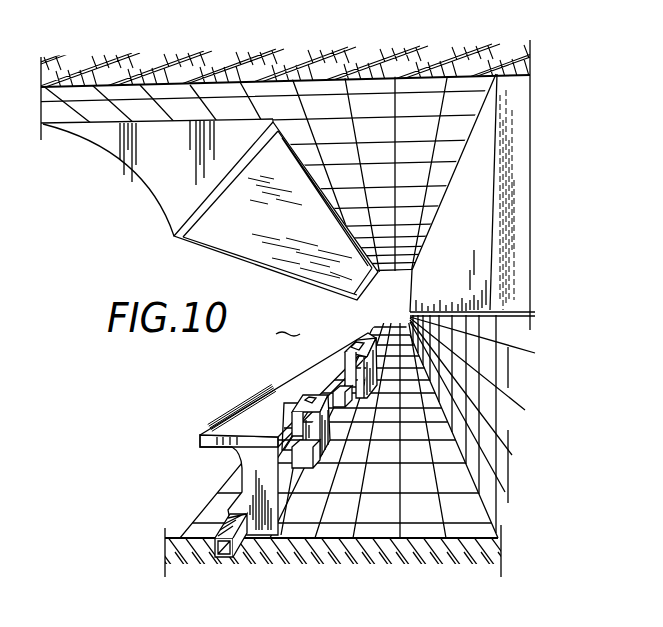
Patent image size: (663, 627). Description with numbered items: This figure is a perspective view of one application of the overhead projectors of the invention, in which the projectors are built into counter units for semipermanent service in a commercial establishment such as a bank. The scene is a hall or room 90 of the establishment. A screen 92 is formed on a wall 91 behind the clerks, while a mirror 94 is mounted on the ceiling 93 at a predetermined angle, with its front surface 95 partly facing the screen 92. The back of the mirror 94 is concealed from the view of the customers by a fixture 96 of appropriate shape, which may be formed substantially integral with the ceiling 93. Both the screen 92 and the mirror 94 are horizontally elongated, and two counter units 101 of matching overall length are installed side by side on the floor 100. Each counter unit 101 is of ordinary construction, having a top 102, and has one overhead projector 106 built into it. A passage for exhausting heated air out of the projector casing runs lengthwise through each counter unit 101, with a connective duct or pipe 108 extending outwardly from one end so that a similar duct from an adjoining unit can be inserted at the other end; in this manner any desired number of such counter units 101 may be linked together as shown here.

The hall or room 90 is at (287, 321).
The wall 91 is at (503, 370).
The screen 92 is at (478, 184).
The ceiling 93 is at (420, 88).
The mirror 94 is at (207, 234).
The front surface 95 is at (281, 245).
The fixture 96 is at (151, 172).
The floor 100 is at (417, 534).
The counter units 101 is at (339, 355).
The top 102 is at (200, 443).
The overhead projector 106 is at (370, 392).
The connective duct or pipe 108 is at (243, 560).